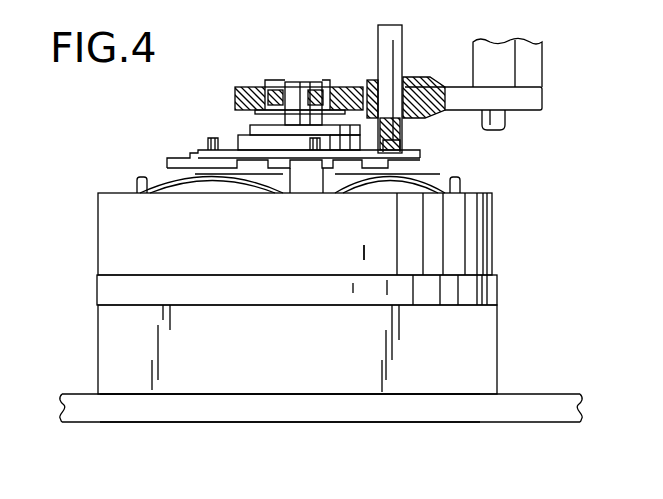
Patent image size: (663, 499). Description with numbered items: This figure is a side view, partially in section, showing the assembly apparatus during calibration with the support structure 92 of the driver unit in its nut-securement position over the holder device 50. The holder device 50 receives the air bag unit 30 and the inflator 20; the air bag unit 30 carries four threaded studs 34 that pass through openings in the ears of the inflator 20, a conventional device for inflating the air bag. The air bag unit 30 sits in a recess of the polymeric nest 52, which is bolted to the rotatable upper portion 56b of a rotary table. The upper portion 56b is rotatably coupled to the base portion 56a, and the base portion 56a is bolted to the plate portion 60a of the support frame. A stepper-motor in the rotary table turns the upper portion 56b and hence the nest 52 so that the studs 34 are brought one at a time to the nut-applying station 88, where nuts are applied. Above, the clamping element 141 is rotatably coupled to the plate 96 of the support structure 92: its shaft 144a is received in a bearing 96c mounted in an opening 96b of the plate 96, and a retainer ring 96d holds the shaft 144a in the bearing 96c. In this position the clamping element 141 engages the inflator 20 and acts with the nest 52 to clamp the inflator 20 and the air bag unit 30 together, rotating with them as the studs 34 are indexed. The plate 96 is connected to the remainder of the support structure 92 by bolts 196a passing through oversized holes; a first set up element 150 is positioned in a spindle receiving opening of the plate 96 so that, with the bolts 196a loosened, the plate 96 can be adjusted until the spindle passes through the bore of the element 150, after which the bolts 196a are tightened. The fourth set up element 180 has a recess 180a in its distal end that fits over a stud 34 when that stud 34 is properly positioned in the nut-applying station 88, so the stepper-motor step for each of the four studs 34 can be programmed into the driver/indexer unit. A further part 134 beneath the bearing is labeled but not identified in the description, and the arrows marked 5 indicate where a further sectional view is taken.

The section line 5- 5 is at (144, 142).
The inflator 20 is at (265, 148).
The air bag unit 30 is at (175, 187).
The threaded studs 34 is at (212, 147).
The holder device 50 is at (530, 332).
The nest 52 is at (483, 246).
The base portion 56a is at (173, 380).
The rotatable upper portion 56b is at (283, 290).
The plate portion 60a is at (75, 396).
The nut-applying station 88 is at (375, 166).
The support structure 92 is at (503, 62).
The plate 96 is at (530, 101).
The opening 96b is at (235, 92).
The bearing 96c is at (278, 88).
The retainer ring 96d is at (290, 83).
The mounting plate 134 is at (332, 128).
The clamping element 141 is at (252, 75).
The shaft 144a is at (304, 86).
The first set up element 150 is at (408, 95).
The fourth set up element 180 is at (405, 52).
The recess 180a is at (403, 122).
The bolts 196a is at (493, 130).